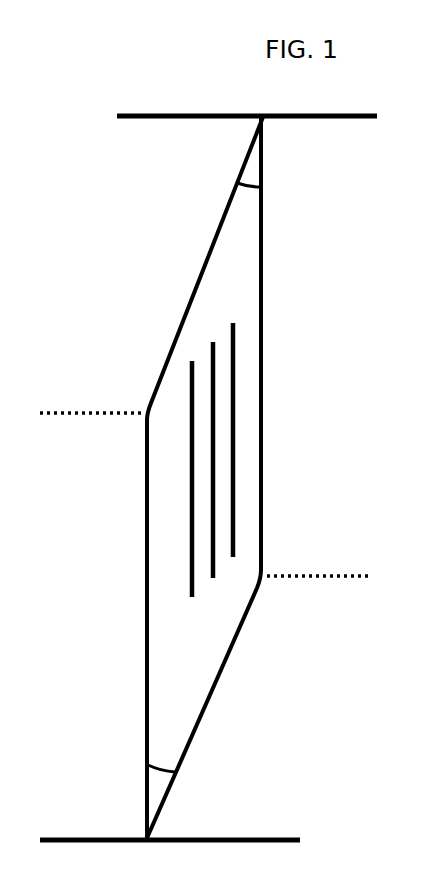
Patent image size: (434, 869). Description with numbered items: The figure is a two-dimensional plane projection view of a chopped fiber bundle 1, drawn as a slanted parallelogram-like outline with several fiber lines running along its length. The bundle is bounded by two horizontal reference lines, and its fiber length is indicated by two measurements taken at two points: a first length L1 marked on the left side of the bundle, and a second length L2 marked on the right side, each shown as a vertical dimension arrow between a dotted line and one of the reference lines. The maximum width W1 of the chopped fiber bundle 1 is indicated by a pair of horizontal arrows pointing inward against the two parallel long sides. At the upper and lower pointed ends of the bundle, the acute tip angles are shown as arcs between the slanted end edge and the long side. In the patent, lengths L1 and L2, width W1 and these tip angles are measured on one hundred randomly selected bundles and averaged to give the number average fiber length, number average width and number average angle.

The chopped fiber bundle 1 is at (236, 301).
The fiber length L1 is at (71, 413).
The fiber length L2 is at (333, 118).
The maximum width W1 is at (290, 507).